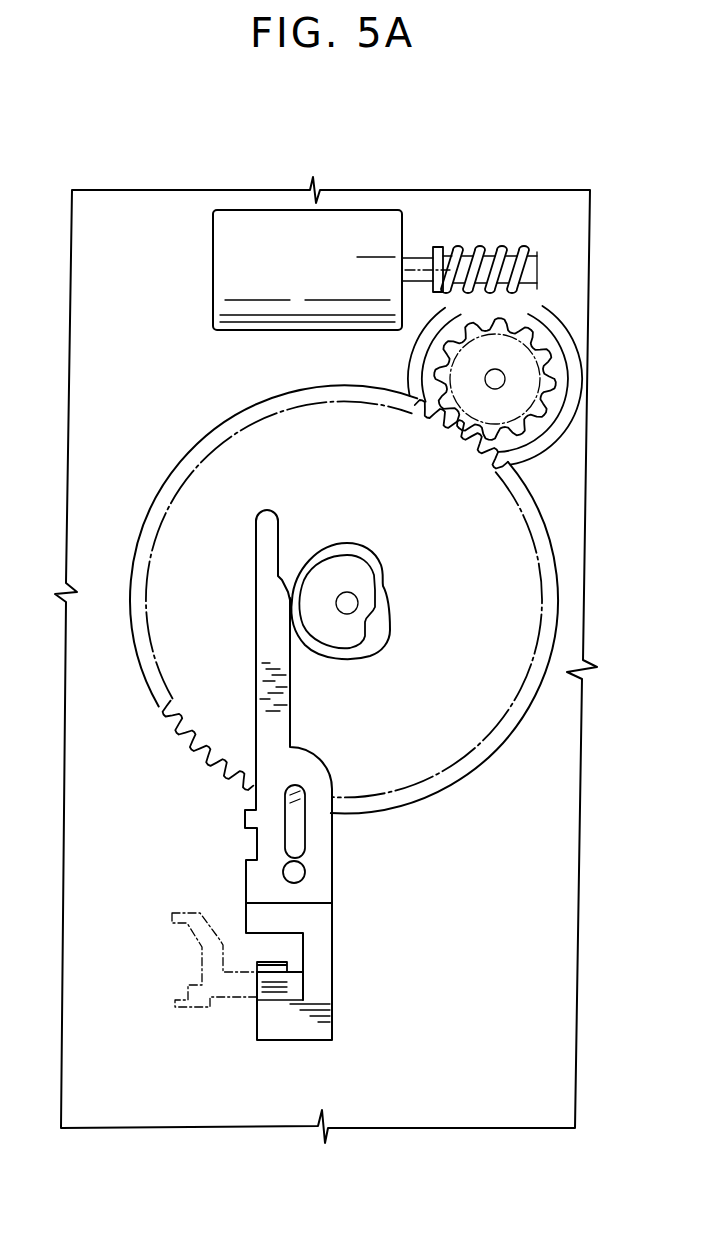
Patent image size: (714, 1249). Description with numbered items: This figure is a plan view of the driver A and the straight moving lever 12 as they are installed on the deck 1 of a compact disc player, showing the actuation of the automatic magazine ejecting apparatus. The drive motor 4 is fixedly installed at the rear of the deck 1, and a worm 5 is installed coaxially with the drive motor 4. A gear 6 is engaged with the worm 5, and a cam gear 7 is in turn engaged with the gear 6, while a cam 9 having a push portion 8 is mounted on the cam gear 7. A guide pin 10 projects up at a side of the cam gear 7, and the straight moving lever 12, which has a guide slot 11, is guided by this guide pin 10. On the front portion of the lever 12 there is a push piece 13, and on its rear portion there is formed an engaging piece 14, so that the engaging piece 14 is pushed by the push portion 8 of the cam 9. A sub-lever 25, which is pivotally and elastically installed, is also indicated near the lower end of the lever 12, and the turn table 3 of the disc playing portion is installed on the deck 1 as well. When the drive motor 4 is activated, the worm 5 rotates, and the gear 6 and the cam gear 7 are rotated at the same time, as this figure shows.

The deck 1 is at (459, 206).
The turn table 3 is at (342, 888).
The drive motor 4 is at (361, 224).
The worm 5 is at (505, 247).
The gear 6 is at (425, 364).
The cam gear 7 is at (470, 734).
The push portion 8 is at (388, 645).
The cam 9 is at (360, 660).
The guide pin 10 is at (292, 872).
The guide slot 11 is at (292, 836).
The straight moving lever 12 is at (334, 822).
The push piece 13 is at (270, 967).
The engaging piece 14 is at (278, 572).
The sub-lever 25 is at (232, 985).
The driver A is at (566, 258).